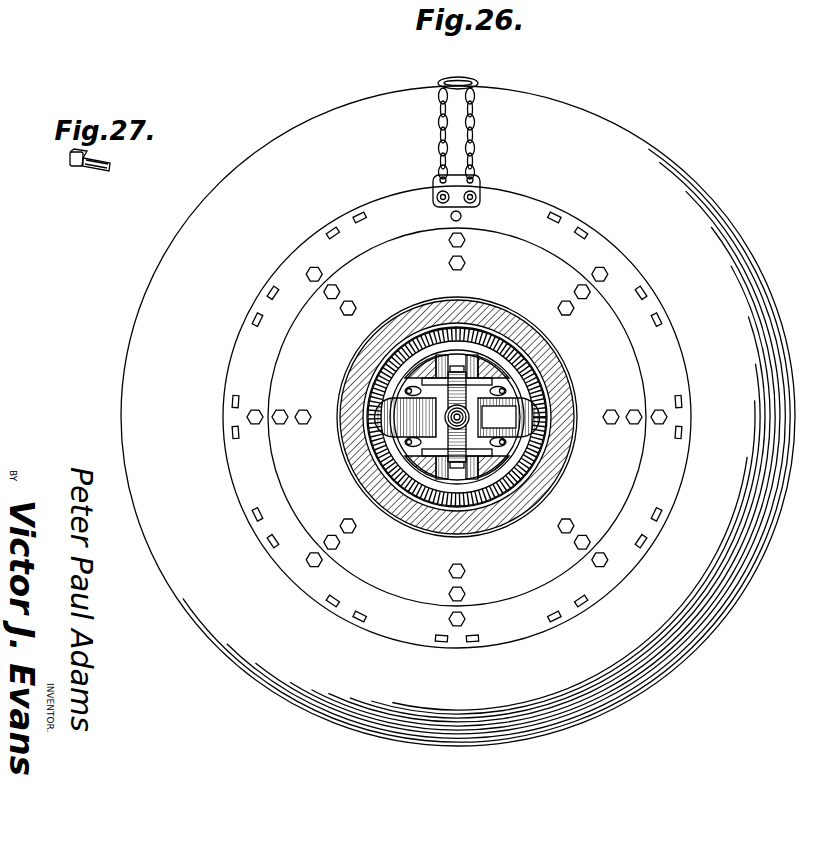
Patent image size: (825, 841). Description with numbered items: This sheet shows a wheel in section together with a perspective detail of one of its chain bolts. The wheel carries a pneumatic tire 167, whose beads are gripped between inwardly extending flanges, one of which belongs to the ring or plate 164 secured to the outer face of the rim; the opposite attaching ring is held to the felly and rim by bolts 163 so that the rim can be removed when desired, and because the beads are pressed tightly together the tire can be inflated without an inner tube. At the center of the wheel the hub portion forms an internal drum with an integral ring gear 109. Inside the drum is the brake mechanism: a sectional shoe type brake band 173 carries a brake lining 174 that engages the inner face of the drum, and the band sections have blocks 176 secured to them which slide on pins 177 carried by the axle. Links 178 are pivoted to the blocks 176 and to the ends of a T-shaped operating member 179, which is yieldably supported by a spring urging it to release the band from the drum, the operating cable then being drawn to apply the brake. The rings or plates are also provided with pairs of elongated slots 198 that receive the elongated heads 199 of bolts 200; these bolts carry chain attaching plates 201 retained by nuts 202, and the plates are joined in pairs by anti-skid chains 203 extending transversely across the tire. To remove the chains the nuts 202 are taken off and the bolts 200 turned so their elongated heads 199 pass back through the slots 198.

In FIG. 26, the ring gear 109 is at (541, 438).
In FIG. 26, the bolts 163 is at (330, 300).
In FIG. 26, the ring or plate 164 is at (630, 496).
In FIG. 26, the pneumatic tire 167 is at (680, 182).
In FIG. 26, the brake band 173 is at (559, 480).
In FIG. 26, the brake lining 174 is at (552, 423).
In FIG. 26, the blocks 176 is at (502, 386).
In FIG. 26, the pins 177 is at (378, 510).
In FIG. 26, the links 178 is at (474, 382).
In FIG. 26, the T-shaped operating member 179 is at (468, 450).
In FIG. 26, the elongated slots 198 is at (641, 297).
In FIG. 27, the elongated heads 199 is at (72, 168).
In FIG. 26, the bolts 200 is at (439, 203).
In FIG. 27, the bolts 200 is at (112, 160).
In FIG. 26, the chain attaching plates 201 is at (482, 170).
In FIG. 26, the nuts 202 is at (478, 205).
In FIG. 26, the anti-skid chains 203 is at (470, 92).